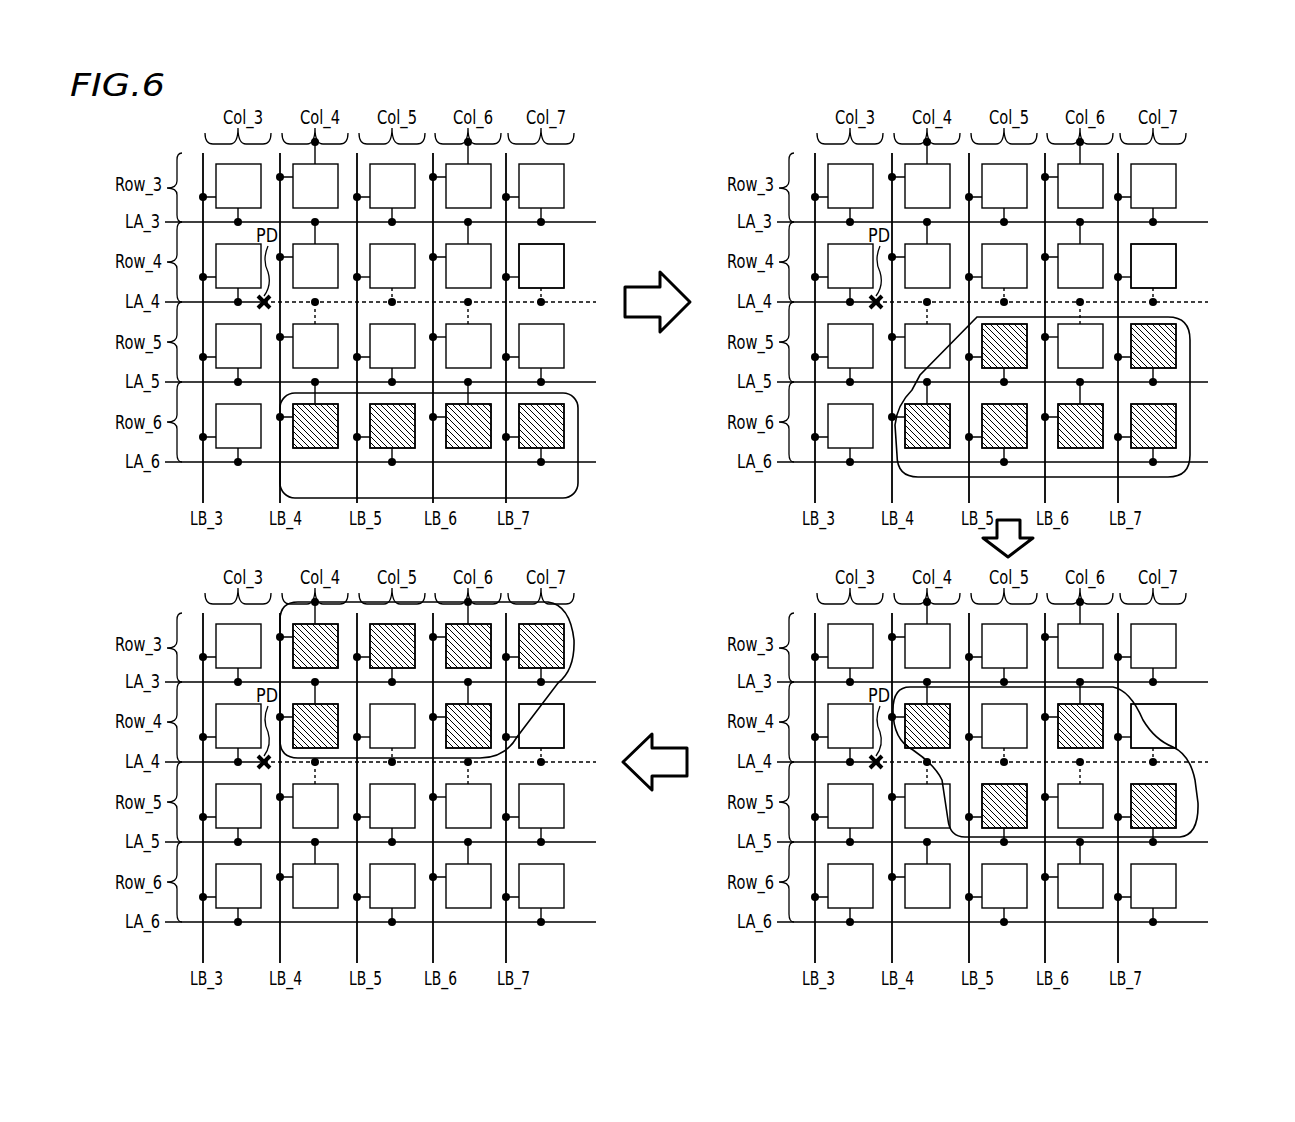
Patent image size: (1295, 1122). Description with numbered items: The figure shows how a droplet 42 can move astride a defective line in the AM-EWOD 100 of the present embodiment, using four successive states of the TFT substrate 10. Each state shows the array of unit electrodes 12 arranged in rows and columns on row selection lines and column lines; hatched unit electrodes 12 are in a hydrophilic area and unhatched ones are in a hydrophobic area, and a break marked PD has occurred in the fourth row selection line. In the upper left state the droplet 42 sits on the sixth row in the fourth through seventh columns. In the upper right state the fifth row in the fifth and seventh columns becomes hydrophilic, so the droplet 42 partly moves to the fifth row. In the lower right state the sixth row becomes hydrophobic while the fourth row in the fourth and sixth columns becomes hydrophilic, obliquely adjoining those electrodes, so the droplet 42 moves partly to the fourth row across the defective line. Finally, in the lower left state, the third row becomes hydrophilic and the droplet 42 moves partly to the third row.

The AM-EWOD 100 is at (700, 541).
The TFT substrate 10 is at (693, 548).
The unit electrode 12 is at (553, 263).
The droplet 42 is at (578, 446).